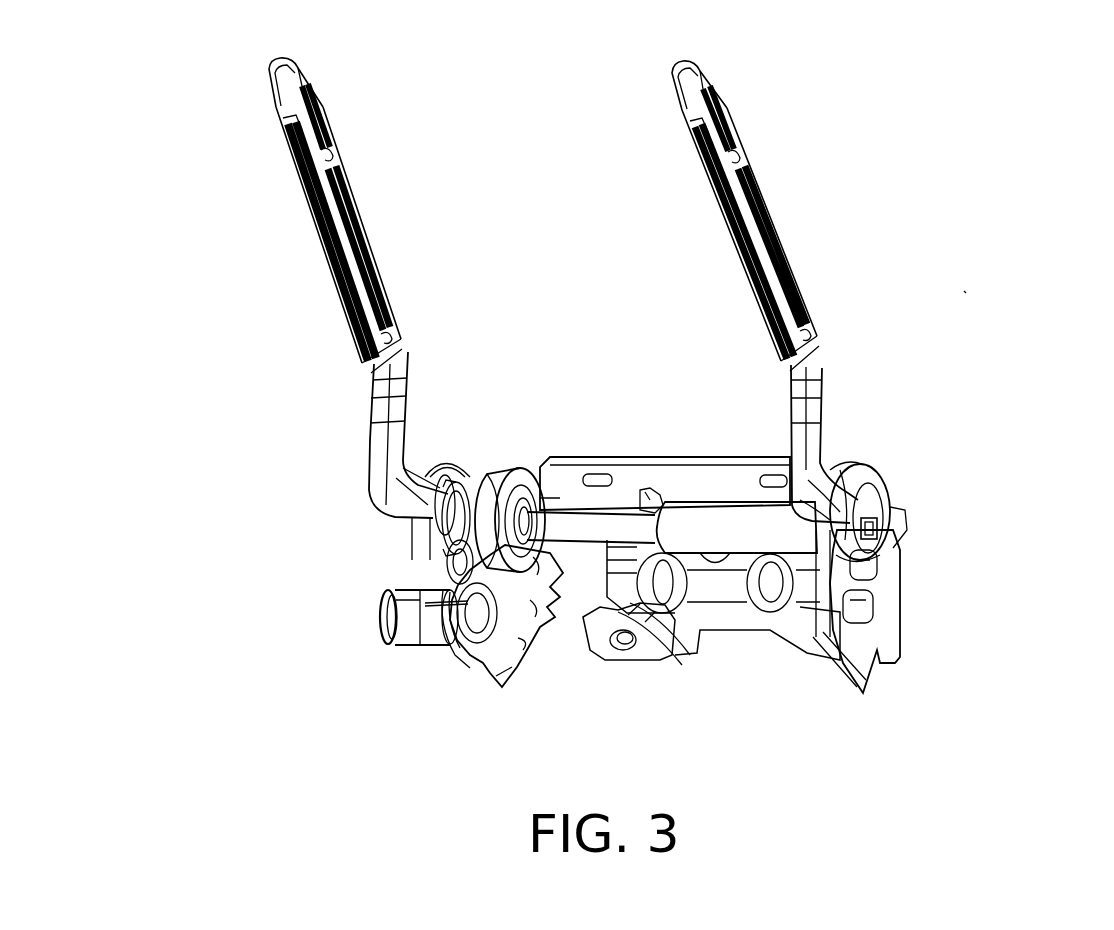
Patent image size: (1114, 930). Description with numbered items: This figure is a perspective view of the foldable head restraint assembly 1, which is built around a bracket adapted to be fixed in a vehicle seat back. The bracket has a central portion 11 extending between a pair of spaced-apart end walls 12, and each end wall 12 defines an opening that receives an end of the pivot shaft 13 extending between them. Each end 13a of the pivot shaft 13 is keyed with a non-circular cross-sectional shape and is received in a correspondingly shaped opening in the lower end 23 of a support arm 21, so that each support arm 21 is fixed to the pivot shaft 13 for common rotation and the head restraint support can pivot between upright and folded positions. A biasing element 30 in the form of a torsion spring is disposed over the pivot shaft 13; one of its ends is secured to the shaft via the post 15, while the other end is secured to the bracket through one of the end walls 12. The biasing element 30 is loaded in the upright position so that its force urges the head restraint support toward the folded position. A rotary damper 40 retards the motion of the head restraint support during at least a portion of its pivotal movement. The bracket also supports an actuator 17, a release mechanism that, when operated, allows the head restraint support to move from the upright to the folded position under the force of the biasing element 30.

The foldable head restraint assembly 1 is at (966, 292).
The central portion 11 is at (603, 455).
The end wall 12 is at (482, 670).
The pivot shaft 13 is at (573, 525).
The end of the pivot shaft 13a is at (873, 527).
The post 15 is at (655, 483).
The actuator 17 is at (381, 592).
The support arm 21 is at (345, 300).
The lower end of the support arm 23 is at (870, 510).
The biasing element 30 is at (710, 510).
The rotary damper 40 is at (490, 468).